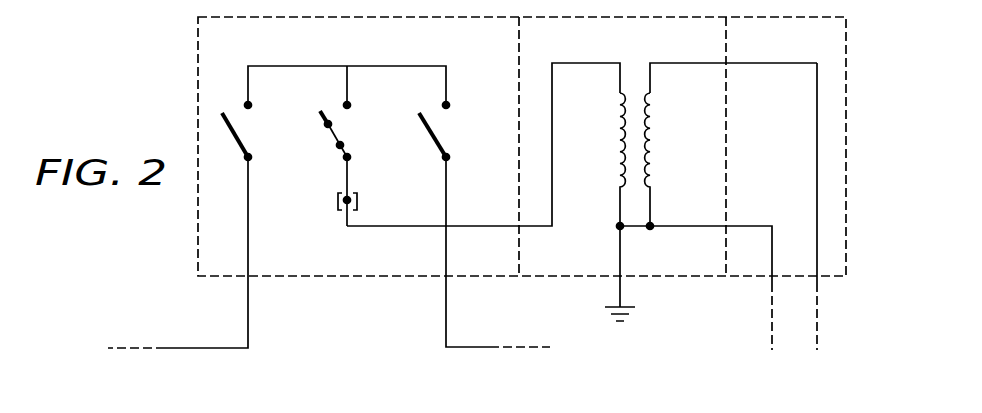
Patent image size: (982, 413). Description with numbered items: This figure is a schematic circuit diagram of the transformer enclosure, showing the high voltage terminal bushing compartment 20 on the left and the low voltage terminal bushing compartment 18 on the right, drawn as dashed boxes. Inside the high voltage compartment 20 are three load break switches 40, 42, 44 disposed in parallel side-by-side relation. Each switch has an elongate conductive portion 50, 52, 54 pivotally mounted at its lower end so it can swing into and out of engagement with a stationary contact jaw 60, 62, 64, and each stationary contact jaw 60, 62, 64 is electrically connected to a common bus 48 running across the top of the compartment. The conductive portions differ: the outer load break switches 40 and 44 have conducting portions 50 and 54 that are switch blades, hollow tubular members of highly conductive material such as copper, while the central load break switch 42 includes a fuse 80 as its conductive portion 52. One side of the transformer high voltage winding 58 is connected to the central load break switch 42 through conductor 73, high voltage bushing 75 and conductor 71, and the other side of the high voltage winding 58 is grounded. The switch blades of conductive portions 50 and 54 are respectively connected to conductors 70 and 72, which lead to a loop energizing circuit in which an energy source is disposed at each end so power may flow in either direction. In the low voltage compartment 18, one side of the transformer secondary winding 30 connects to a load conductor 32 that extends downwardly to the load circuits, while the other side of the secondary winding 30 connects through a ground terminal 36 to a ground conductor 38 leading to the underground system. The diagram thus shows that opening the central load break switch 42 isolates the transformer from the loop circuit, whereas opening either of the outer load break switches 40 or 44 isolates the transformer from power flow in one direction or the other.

The low voltage terminal bushing compartment 18 is at (836, 44).
The high voltage terminal bushing compartment 20 is at (237, 48).
The secondary winding 30 is at (653, 142).
The load conductor 32 is at (816, 143).
The ground terminal 36 is at (652, 224).
The ground conductor 38 is at (743, 225).
The load break switch 40 is at (255, 162).
The load break switch 42 is at (333, 170).
The load break switch 44 is at (451, 162).
The common bus 48 is at (432, 65).
The conductive portion 50 is at (241, 151).
The conductive portion 52 is at (334, 137).
The conductive portion 54 is at (436, 151).
The high voltage winding 58 is at (617, 142).
The stationary contact jaw 60 is at (253, 104).
The stationary contact jaw 62 is at (352, 104).
The stationary contact jaw 64 is at (451, 104).
The conductor 70 is at (250, 262).
The conductor 71 is at (344, 193).
The conductor 72 is at (448, 262).
The conductor 73 is at (356, 228).
The high voltage bushing 75 is at (320, 212).
The fuse 80 is at (334, 135).